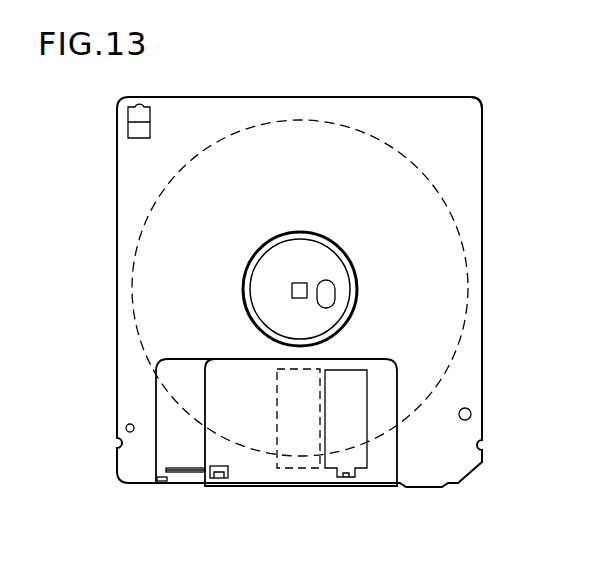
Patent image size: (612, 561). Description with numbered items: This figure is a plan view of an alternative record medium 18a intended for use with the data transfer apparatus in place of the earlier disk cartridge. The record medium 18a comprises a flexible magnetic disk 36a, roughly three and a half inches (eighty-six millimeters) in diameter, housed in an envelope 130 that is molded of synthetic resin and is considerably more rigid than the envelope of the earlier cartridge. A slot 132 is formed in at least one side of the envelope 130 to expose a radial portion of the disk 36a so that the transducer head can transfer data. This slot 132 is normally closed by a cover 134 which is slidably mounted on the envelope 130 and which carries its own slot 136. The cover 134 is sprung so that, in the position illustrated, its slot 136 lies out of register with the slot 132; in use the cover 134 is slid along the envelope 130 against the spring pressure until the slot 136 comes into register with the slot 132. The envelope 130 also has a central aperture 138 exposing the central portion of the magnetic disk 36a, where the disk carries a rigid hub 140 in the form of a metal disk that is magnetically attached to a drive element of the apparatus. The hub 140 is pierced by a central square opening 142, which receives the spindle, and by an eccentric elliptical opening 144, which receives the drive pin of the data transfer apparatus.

The record medium 18a is at (452, 95).
The envelope 130 is at (484, 164).
The flexible magnetic disk 36a is at (427, 190).
The central aperture 138 is at (247, 266).
The rigid hub 140 is at (318, 250).
The central square opening 142 is at (299, 283).
The eccentric elliptical opening 144 is at (332, 293).
The cover 134 is at (243, 479).
The slot 132 is at (280, 468).
The slot 136 is at (360, 458).